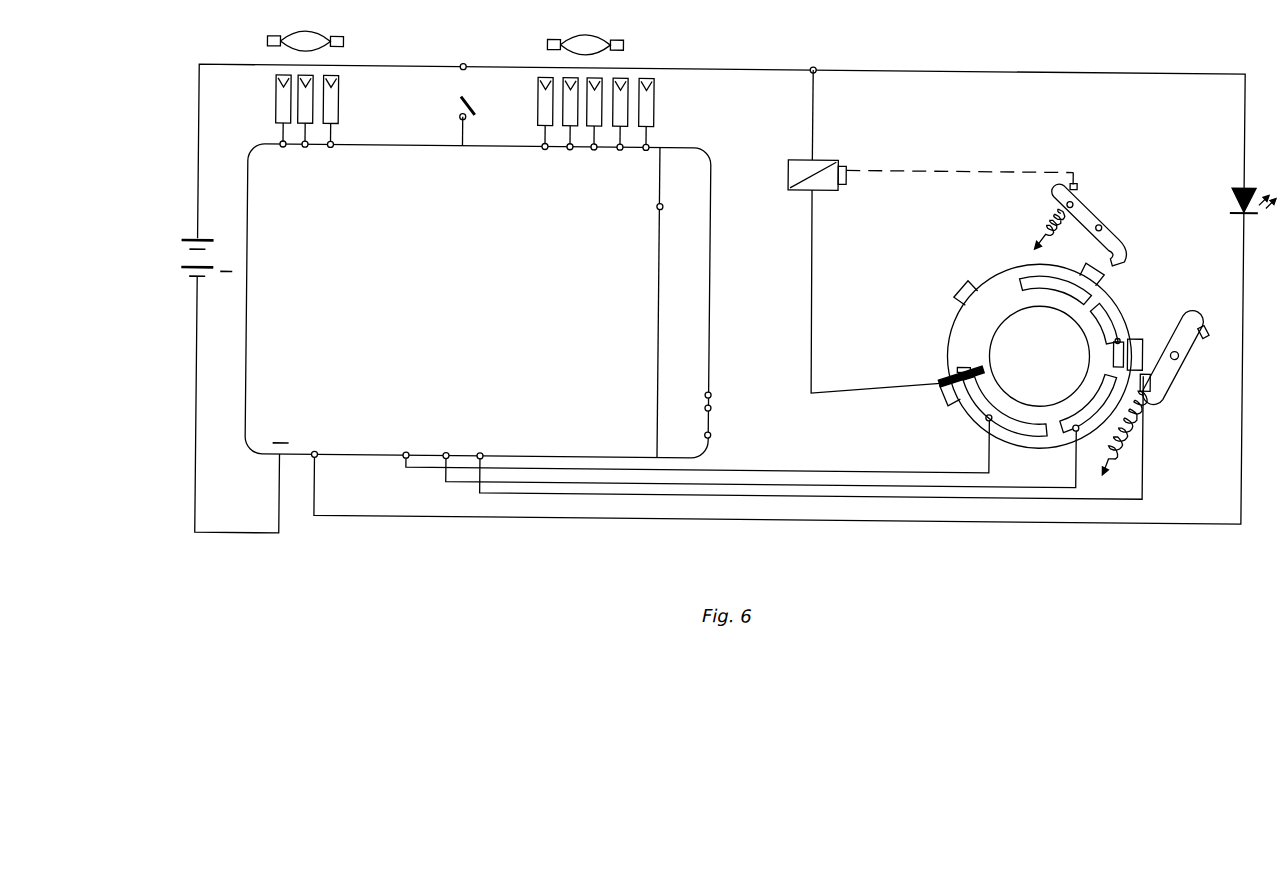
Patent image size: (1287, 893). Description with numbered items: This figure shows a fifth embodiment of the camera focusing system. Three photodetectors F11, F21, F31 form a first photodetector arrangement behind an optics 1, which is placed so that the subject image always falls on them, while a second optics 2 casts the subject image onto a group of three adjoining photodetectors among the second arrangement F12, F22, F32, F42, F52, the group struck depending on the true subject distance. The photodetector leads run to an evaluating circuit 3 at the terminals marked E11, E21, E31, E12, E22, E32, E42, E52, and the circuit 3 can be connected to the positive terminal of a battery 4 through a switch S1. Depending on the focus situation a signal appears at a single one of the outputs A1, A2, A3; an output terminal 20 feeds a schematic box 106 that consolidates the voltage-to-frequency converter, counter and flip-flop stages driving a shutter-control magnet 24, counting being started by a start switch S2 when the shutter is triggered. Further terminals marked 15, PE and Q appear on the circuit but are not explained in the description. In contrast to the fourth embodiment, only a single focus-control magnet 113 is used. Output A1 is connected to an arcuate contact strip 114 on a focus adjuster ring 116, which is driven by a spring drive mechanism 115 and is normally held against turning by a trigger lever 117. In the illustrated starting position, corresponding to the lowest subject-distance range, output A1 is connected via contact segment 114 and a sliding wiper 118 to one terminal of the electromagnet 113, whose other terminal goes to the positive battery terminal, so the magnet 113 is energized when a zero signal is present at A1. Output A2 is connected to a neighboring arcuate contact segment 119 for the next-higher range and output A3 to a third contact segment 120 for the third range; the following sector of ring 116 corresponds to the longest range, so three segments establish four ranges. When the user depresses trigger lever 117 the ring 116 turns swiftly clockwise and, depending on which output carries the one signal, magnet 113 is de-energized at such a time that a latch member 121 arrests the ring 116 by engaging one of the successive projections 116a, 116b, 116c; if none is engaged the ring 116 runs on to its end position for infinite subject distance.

The optics 1 is at (318, 45).
The optics 2 is at (600, 46).
The evaluating circuit 3 is at (264, 303).
The battery 4 is at (232, 257).
The terminal 15 of control unit 15 is at (758, 364).
The output terminal 20 is at (657, 209).
The shutter-control magnet 24 is at (1228, 190).
The schematic box 106 is at (696, 300).
The focus-control magnet 113 is at (831, 168).
The arcuate contact strip 114 is at (988, 418).
The spring drive mechanism 115 is at (1124, 445).
The focus adjuster ring 116 is at (1052, 277).
The projection 116a is at (1101, 280).
The projection 116b is at (963, 279).
The projection 116c is at (946, 397).
The trigger lever 117 is at (1194, 313).
The sliding wiper 118 is at (941, 374).
The arcuate contact segment 119 is at (1104, 401).
The arcuate contact segment 120 is at (1108, 318).
The latch member 121 is at (1129, 240).
The switch S1 is at (456, 106).
The start switch S2 is at (691, 409).
The terminal PE is at (691, 394).
The terminal Q is at (697, 435).
The output A1 is at (691, 442).
The output A2 is at (751, 455).
The output A3 is at (803, 435).
The photodetector F11 is at (280, 86).
The photodetector F21 is at (303, 105).
The photodetector F31 is at (333, 93).
The photodetector F12 is at (542, 87).
The photodetector F22 is at (567, 105).
The photodetector F32 is at (594, 115).
The photodetector F42 is at (620, 103).
The photodetector F52 is at (646, 92).
The terminal E11 is at (275, 155).
The terminal E21 is at (300, 151).
The terminal E31 is at (331, 151).
The terminal E12 is at (541, 151).
The terminal E22 is at (566, 151).
The terminal E32 is at (590, 151).
The terminal E42 is at (617, 151).
The terminal E52 is at (642, 151).